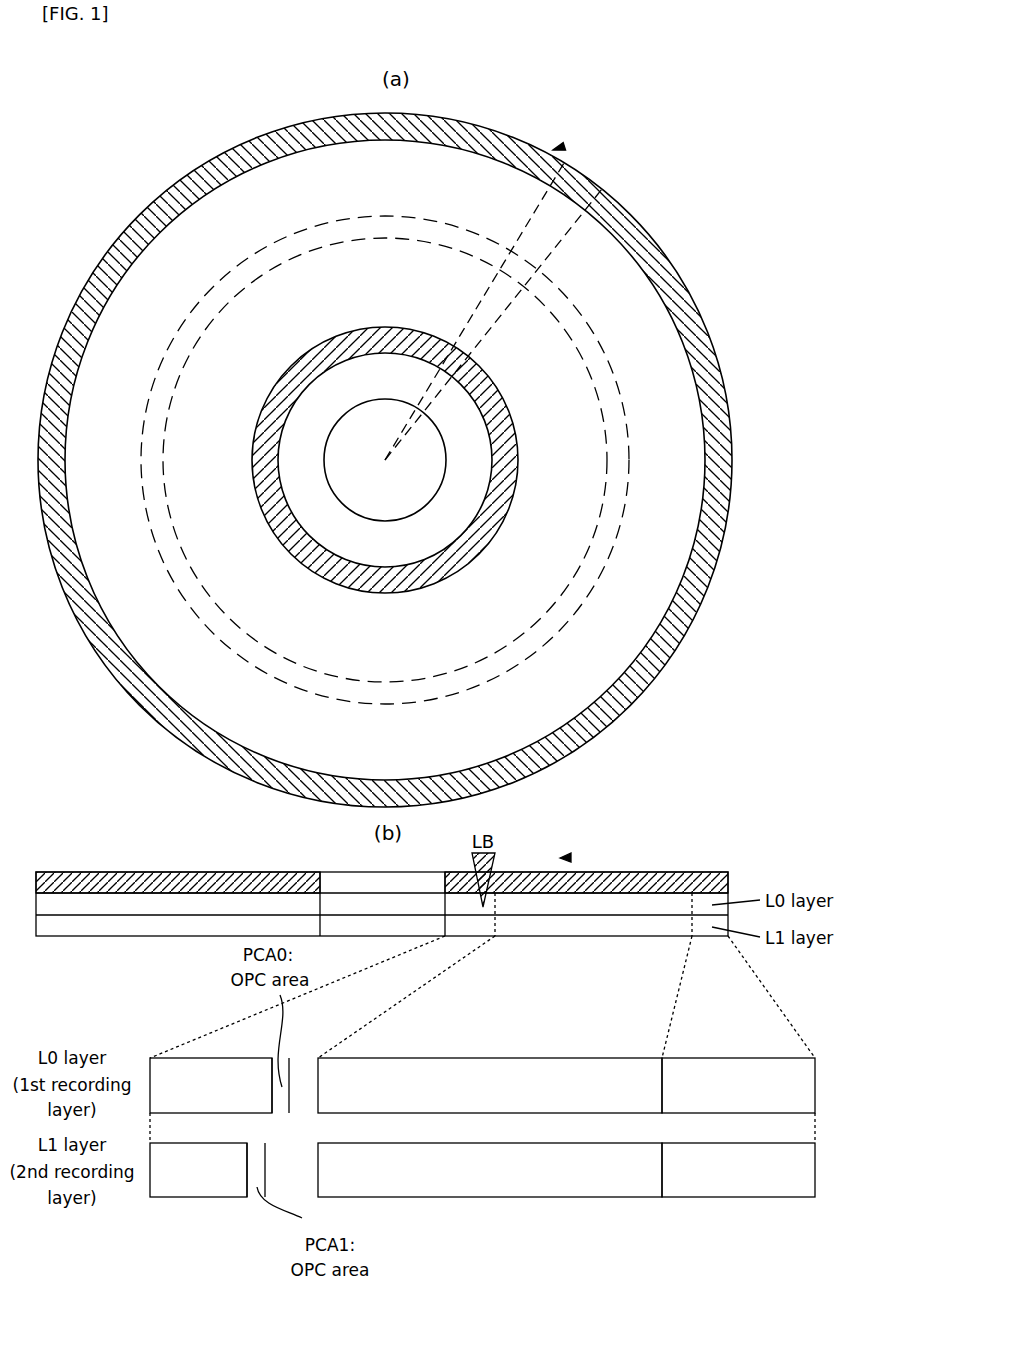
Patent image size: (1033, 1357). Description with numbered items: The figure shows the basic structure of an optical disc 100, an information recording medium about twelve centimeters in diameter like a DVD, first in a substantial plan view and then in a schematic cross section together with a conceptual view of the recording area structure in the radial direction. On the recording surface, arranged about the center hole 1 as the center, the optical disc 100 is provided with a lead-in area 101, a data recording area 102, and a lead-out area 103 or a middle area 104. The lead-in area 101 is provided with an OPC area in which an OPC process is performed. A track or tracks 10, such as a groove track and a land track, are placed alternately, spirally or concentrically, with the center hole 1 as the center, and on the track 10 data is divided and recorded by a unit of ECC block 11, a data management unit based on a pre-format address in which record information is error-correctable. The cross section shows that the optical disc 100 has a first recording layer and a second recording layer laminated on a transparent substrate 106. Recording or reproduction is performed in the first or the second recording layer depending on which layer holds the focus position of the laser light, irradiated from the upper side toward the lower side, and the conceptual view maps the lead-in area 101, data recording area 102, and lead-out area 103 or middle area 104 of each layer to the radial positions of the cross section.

The center hole 1 is at (327, 437).
The track 10 is at (548, 290).
The ECC block 11 is at (528, 256).
The optical disc 100 is at (562, 147).
The lead-in area 101 is at (503, 385).
The data recording area 102 is at (643, 437).
The lead-out area 103 is at (690, 1220).
The middle area 104 is at (732, 448).
The transparent substrate 106 is at (657, 882).